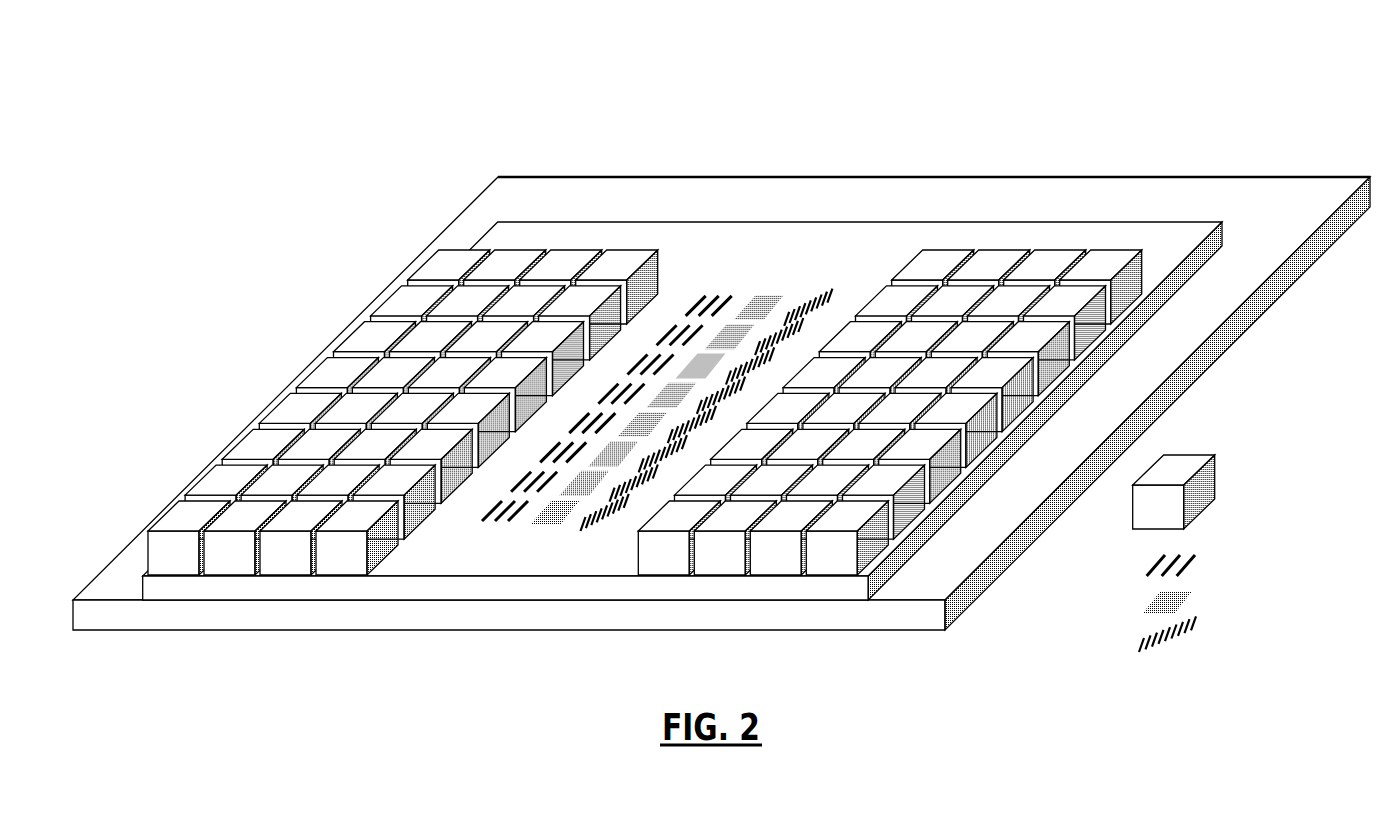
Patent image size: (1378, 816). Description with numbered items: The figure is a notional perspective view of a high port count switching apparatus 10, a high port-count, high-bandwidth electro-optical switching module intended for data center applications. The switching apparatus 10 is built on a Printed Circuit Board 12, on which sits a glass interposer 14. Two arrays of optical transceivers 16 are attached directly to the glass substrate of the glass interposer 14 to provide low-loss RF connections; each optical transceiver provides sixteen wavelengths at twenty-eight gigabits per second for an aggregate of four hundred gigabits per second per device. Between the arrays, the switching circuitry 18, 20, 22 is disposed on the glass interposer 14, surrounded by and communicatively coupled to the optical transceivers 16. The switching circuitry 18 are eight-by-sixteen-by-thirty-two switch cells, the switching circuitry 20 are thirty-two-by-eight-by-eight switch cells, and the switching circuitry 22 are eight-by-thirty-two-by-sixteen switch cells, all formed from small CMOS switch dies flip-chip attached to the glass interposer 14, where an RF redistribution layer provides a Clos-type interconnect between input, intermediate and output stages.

The high port count switching apparatus 10 is at (1230, 82).
The printed circuit board 12 is at (1082, 178).
The glass interposer 14 is at (935, 223).
The optical transceivers 16 is at (528, 247).
The switching circuitry 18 is at (715, 295).
The switching circuitry 20 is at (770, 295).
The switching circuitry 22 is at (819, 295).